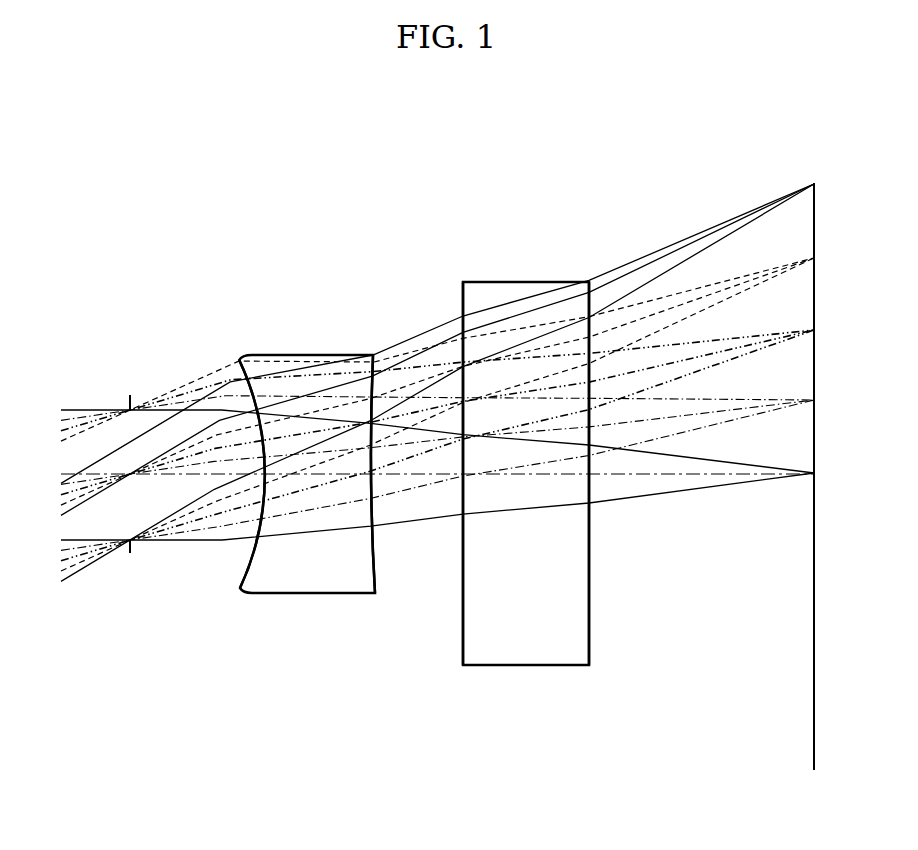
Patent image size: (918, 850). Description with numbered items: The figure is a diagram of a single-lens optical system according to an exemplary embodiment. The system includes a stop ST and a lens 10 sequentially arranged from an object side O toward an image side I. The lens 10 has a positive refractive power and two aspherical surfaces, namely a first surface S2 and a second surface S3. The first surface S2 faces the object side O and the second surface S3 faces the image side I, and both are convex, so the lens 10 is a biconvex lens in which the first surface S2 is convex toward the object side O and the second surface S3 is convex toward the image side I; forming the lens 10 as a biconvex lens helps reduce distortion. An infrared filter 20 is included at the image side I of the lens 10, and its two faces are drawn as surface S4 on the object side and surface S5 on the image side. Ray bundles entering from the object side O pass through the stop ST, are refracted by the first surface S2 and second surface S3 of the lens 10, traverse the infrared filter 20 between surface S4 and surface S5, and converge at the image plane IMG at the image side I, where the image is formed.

The lens 10 is at (302, 585).
The infrared filter 20 is at (524, 657).
The first surface S2 is at (232, 375).
The second surface S3 is at (377, 385).
The surface of the infrared filter S4 is at (463, 305).
The surface of the infrared filter S5 is at (590, 303).
The stop ST is at (129, 458).
The image plane IMG is at (812, 461).
The object side O is at (30, 474).
The image side I is at (845, 476).